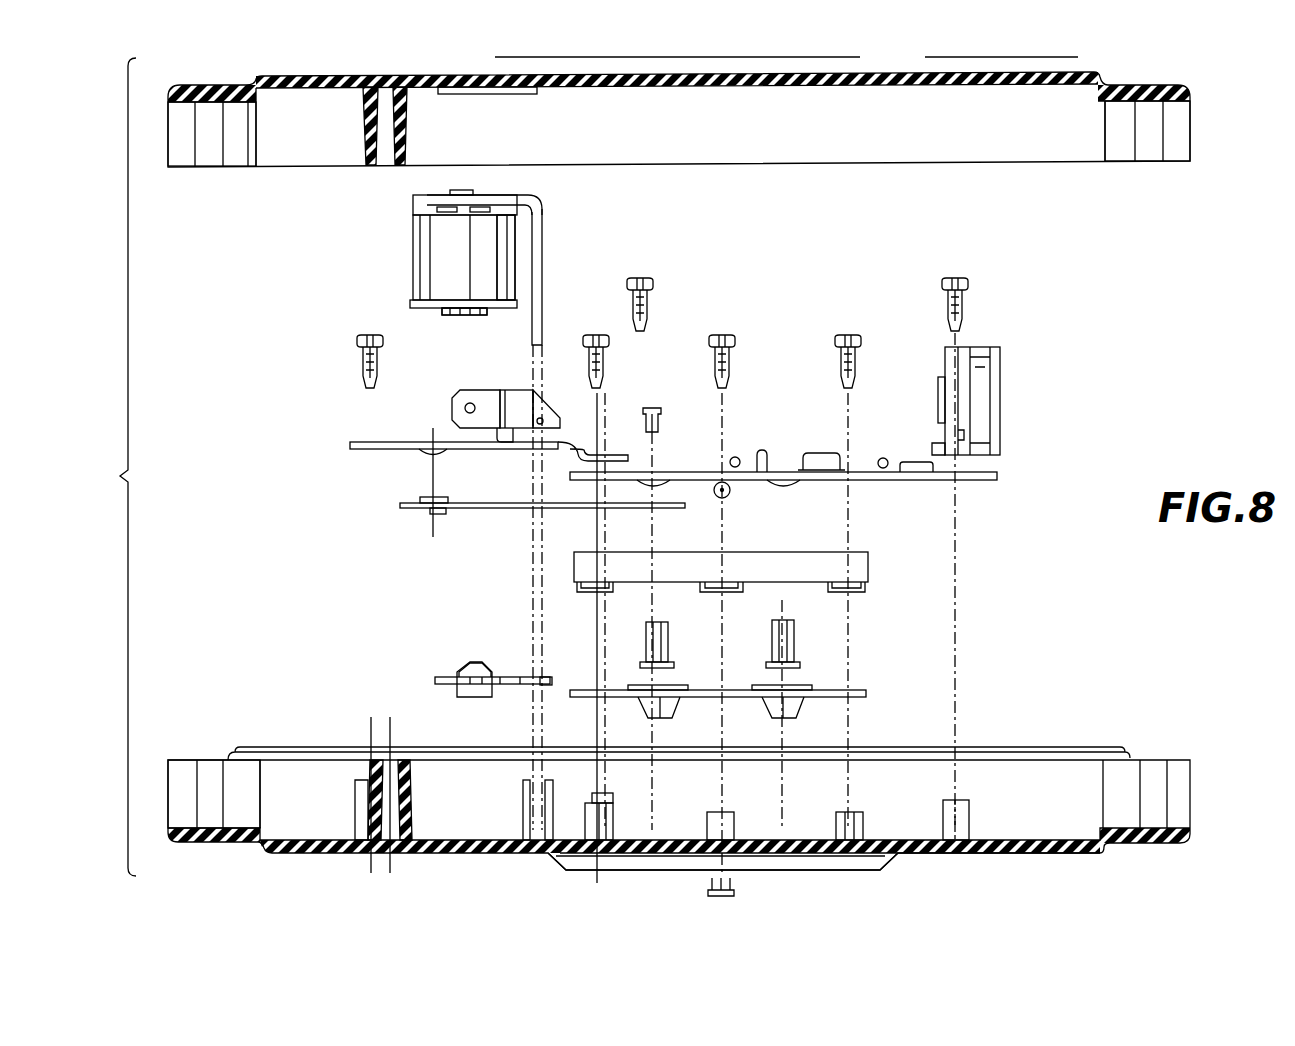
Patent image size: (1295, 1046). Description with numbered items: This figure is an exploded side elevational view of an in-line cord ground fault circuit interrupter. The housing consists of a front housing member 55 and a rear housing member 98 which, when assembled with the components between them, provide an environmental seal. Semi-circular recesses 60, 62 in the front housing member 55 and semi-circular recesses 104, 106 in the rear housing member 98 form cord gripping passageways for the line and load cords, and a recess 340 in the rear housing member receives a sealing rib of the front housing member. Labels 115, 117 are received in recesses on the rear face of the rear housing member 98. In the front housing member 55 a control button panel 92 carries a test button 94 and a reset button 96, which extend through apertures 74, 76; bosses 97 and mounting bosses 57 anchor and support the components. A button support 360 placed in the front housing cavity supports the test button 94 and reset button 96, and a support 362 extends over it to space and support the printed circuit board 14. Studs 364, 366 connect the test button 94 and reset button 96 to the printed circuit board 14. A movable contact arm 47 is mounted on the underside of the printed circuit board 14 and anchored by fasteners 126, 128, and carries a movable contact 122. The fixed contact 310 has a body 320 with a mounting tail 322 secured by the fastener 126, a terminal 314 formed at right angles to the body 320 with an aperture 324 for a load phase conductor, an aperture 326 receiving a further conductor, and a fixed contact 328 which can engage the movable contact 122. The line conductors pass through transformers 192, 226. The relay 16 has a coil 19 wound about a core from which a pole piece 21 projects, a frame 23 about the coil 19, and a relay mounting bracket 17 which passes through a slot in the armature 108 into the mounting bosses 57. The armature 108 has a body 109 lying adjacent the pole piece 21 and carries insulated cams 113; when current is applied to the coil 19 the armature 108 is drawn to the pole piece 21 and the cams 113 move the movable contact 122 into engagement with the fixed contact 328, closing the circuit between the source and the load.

The printed circuit board 14 is at (980, 483).
The relay 16 is at (520, 247).
The relay mounting bracket 17 is at (542, 284).
The coil 19 is at (440, 258).
The pole piece 21 is at (506, 318).
The frame 23 is at (520, 212).
The movable contact arm 47 is at (492, 508).
The front housing member 55 is at (1082, 856).
The mounting bosses 57 is at (526, 822).
The semi-circular recess 60 is at (707, 812).
The semi-circular recess 62 is at (203, 793).
The aperture 74 is at (642, 853).
The aperture 76 is at (793, 840).
The control button panel 92 is at (858, 868).
The test button 94 is at (661, 708).
The reset button 96 is at (789, 708).
The bosses 97 is at (410, 797).
The rear housing member 98 is at (1110, 75).
The semi-circular recess 104 is at (1163, 145).
The semi-circular recess 106 is at (212, 140).
The armature 108 is at (470, 660).
The body 109 is at (546, 678).
The insulated cam 113 is at (495, 628).
The label 115 is at (495, 57).
The label 117 is at (1078, 57).
The movable contact 122 is at (427, 508).
The fastener 126 is at (598, 333).
The fastener 128 is at (656, 262).
The transformer 192 is at (957, 348).
The transformer 226 is at (1003, 365).
The fixed contact 310 is at (455, 444).
The terminal 314 is at (485, 398).
The body 320 is at (384, 453).
The mounting tail 322 is at (623, 460).
The aperture 324 is at (452, 403).
The aperture 326 is at (537, 424).
The fixed contact 328 is at (432, 460).
The recess 340 is at (513, 452).
The button support 360 is at (749, 702).
The support 362 is at (928, 530).
The stud 364 is at (700, 607).
The stud 366 is at (822, 625).